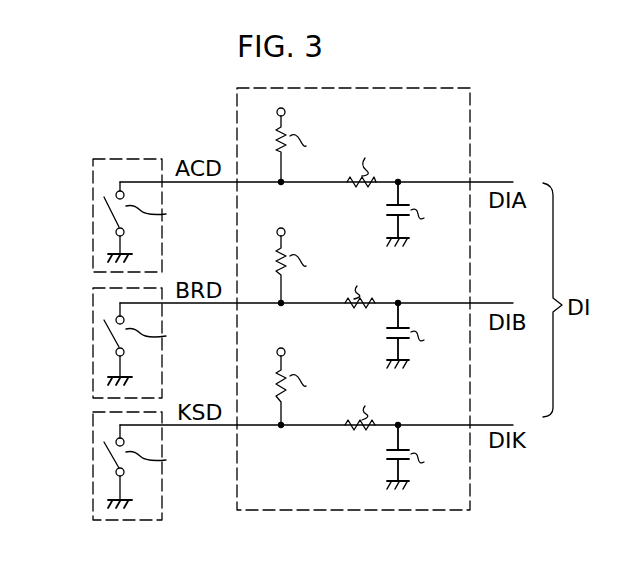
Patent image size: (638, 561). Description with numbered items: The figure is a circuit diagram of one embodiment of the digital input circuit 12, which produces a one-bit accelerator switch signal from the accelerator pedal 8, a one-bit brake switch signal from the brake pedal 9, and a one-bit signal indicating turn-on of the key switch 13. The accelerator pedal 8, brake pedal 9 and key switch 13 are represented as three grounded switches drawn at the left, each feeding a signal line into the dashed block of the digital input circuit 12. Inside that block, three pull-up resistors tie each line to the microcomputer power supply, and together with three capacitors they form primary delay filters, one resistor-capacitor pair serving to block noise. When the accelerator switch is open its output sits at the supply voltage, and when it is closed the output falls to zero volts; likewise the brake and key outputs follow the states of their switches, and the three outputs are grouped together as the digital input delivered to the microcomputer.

The accelerator pedal 8 is at (92, 226).
The brake pedal 9 is at (92, 345).
The key switch 13 is at (92, 476).
The digital input circuit 12 is at (237, 118).